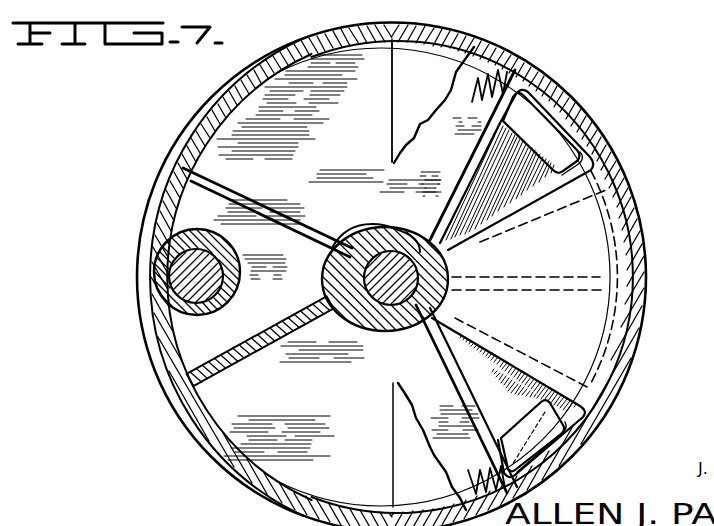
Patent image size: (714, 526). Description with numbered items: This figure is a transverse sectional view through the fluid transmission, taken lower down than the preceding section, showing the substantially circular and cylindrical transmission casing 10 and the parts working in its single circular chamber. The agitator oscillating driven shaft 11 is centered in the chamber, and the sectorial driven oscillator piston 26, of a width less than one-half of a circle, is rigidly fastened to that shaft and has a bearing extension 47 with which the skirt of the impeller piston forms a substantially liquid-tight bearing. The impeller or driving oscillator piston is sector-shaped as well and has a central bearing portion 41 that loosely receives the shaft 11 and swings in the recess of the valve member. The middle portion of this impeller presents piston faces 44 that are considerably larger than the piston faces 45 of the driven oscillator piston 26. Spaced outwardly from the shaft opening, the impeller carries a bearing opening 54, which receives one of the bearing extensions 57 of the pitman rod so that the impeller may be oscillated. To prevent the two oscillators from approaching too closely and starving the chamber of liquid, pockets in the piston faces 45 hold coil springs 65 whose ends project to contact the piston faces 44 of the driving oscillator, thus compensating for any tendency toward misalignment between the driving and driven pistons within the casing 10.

The transmission casing 10 is at (640, 231).
The agitator oscillating driven shaft 11 is at (405, 242).
The sectorial driven oscillator piston 26 is at (605, 272).
The central bearing portion 41 is at (465, 399).
The piston faces 44 is at (262, 352).
The piston faces 45 is at (472, 151).
The bearing extension 47 is at (355, 240).
The bearing opening 54 is at (209, 272).
The bearing extensions 57 is at (236, 256).
The coil springs 65 is at (474, 104).